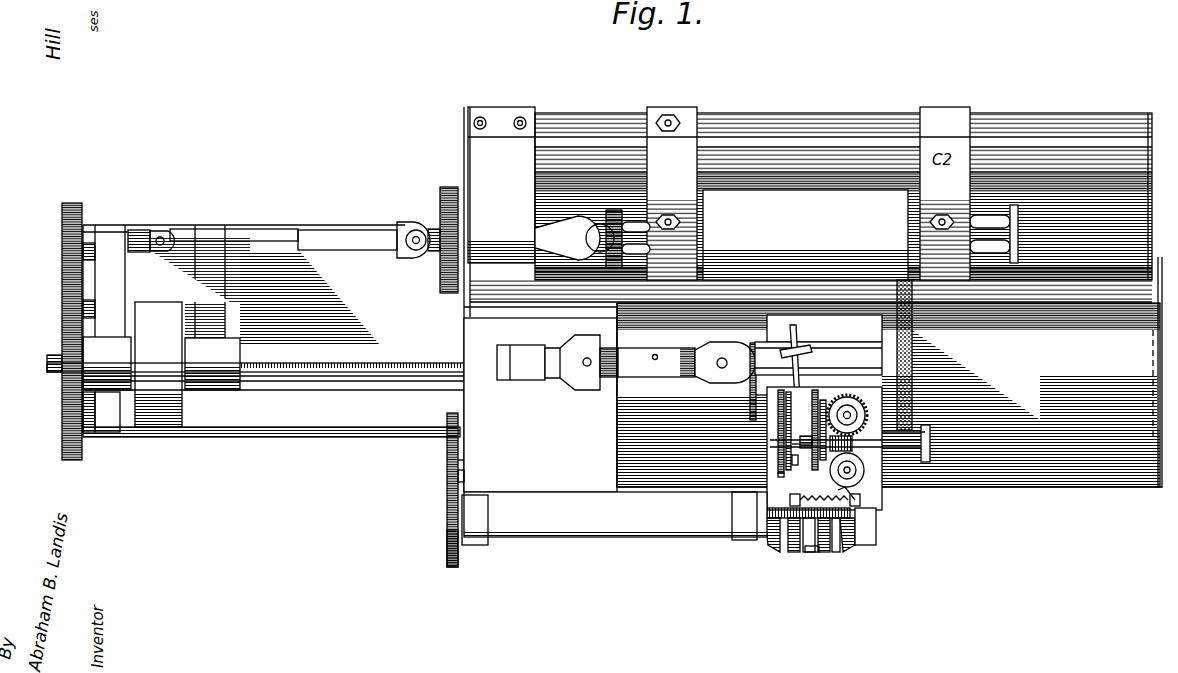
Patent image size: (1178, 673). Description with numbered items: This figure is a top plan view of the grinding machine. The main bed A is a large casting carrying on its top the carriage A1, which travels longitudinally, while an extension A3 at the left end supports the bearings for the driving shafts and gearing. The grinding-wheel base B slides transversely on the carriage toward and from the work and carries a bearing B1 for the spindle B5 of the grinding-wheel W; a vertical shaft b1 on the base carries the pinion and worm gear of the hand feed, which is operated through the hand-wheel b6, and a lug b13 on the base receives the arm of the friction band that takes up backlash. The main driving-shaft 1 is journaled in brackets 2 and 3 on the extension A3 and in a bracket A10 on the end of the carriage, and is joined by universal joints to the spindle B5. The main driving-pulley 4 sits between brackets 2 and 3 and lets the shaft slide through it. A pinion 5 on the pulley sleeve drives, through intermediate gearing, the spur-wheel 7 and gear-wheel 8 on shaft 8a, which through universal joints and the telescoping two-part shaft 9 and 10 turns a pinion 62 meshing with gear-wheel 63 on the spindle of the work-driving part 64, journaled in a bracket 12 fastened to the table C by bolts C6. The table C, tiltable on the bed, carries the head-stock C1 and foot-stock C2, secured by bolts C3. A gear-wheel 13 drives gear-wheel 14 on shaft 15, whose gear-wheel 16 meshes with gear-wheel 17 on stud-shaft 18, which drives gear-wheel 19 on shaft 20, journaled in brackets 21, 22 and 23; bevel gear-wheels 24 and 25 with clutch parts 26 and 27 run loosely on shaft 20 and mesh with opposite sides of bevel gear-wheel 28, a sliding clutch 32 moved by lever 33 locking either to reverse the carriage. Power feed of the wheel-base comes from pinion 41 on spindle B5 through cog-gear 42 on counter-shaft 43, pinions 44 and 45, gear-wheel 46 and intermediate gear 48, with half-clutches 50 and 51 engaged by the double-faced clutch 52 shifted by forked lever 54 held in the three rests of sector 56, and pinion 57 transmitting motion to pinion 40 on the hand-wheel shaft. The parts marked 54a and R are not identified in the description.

The main driving-shaft 1 is at (393, 362).
The bracket 2 is at (212, 364).
The bracket 3 is at (107, 363).
The main driving-pulley 4 is at (158, 364).
The pinion 5 is at (47, 364).
The spur-wheel 7 is at (62, 294).
The gear-wheel 8 is at (62, 238).
The shaft 8a is at (133, 228).
The two-part shaft 9 is at (276, 236).
The two-part shaft 10 is at (309, 235).
The bracket 12 is at (501, 185).
The gear-wheel 13 is at (62, 405).
The gear-wheel 14 is at (62, 440).
The shaft 15 is at (265, 437).
The gear-wheel 16 is at (447, 440).
The gear-wheel 17 is at (447, 465).
The stud-shaft 18 is at (462, 480).
The gear-wheel 19 is at (447, 533).
The shaft 20 is at (585, 538).
The bracket 21 is at (484, 547).
The bracket 22 is at (740, 545).
The bracket 23 is at (878, 535).
The bevel gear-wheel 24 is at (774, 552).
The bevel gear-wheel 25 is at (852, 547).
The clutch part 26 is at (794, 554).
The clutch part 27 is at (836, 554).
The bevel gear-wheel 28 is at (767, 512).
The sliding clutch 32 is at (822, 554).
The lever 33 is at (830, 560).
The pinion 40 is at (847, 448).
The pinion 41 is at (761, 379).
The cog-gear 42 is at (753, 404).
The counter-shaft 43 is at (777, 431).
The pinion 44 is at (792, 431).
The pinion 45 is at (823, 429).
The gear-wheel 46 is at (777, 480).
The intermediate gear 48 is at (814, 430).
The half-clutch 50 is at (794, 464).
The half-clutch 51 is at (807, 458).
The sliding double-faced clutch 52 is at (802, 452).
The forked lever 54 is at (800, 346).
The handle 54a is at (911, 445).
The sector 56 is at (792, 346).
The pinion 57 is at (855, 470).
The pinion 62 is at (414, 229).
The gear-wheel 63 is at (447, 190).
The work-driving part 64 is at (592, 239).
The main bed A is at (540, 399).
The carriage A1 is at (889, 372).
The extension A3 is at (310, 298).
The bracket A10 is at (568, 394).
The grinding-wheel base B is at (885, 503).
The bearing B1 is at (826, 342).
The spindle B5 is at (702, 378).
The table C is at (870, 118).
The head-stock C1 is at (672, 193).
The foot-stock C2 is at (1030, 140).
The bolts C3 is at (670, 115).
The bolts C6 is at (519, 117).
The plate R is at (805, 235).
The grinding-wheel W is at (915, 372).
The vertical shaft b1 is at (851, 404).
The hand-wheel b6 is at (930, 432).
The lug b13 is at (836, 496).